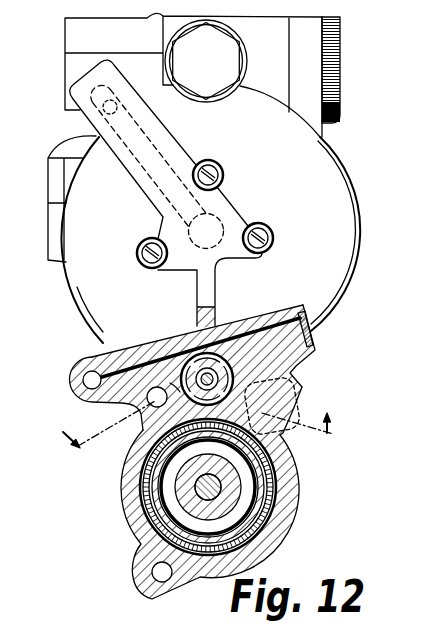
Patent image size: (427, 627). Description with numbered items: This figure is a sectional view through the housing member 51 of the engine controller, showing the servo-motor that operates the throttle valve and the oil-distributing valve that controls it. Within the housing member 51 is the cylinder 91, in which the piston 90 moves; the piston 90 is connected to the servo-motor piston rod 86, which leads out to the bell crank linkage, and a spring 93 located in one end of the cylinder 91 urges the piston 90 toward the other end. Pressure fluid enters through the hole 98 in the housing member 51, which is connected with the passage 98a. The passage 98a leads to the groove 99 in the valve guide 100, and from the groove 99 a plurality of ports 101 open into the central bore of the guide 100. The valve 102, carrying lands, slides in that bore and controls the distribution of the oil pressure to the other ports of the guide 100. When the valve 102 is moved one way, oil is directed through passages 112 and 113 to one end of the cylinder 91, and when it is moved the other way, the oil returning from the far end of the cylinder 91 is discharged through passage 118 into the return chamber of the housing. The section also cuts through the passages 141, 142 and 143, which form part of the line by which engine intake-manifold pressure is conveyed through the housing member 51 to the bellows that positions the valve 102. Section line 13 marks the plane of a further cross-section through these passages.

The housing member 51 is at (50, 178).
The servo-motor piston rod 86 is at (193, 492).
The piston 90 is at (178, 480).
The cylinder 91 is at (277, 480).
The spring 93 is at (270, 517).
The hole 98 is at (82, 382).
The passage 98a is at (170, 346).
The groove 99 is at (210, 357).
The valve guide 100 is at (296, 366).
The ports 101 is at (172, 384).
The valve 102 is at (303, 390).
The passage 112 is at (284, 437).
The passage 113 is at (300, 380).
The passage 118 is at (149, 401).
The section line 13- 13 is at (203, 424).
The passage 141 is at (215, 222).
The passage 142 is at (150, 175).
The passage 143 is at (103, 110).